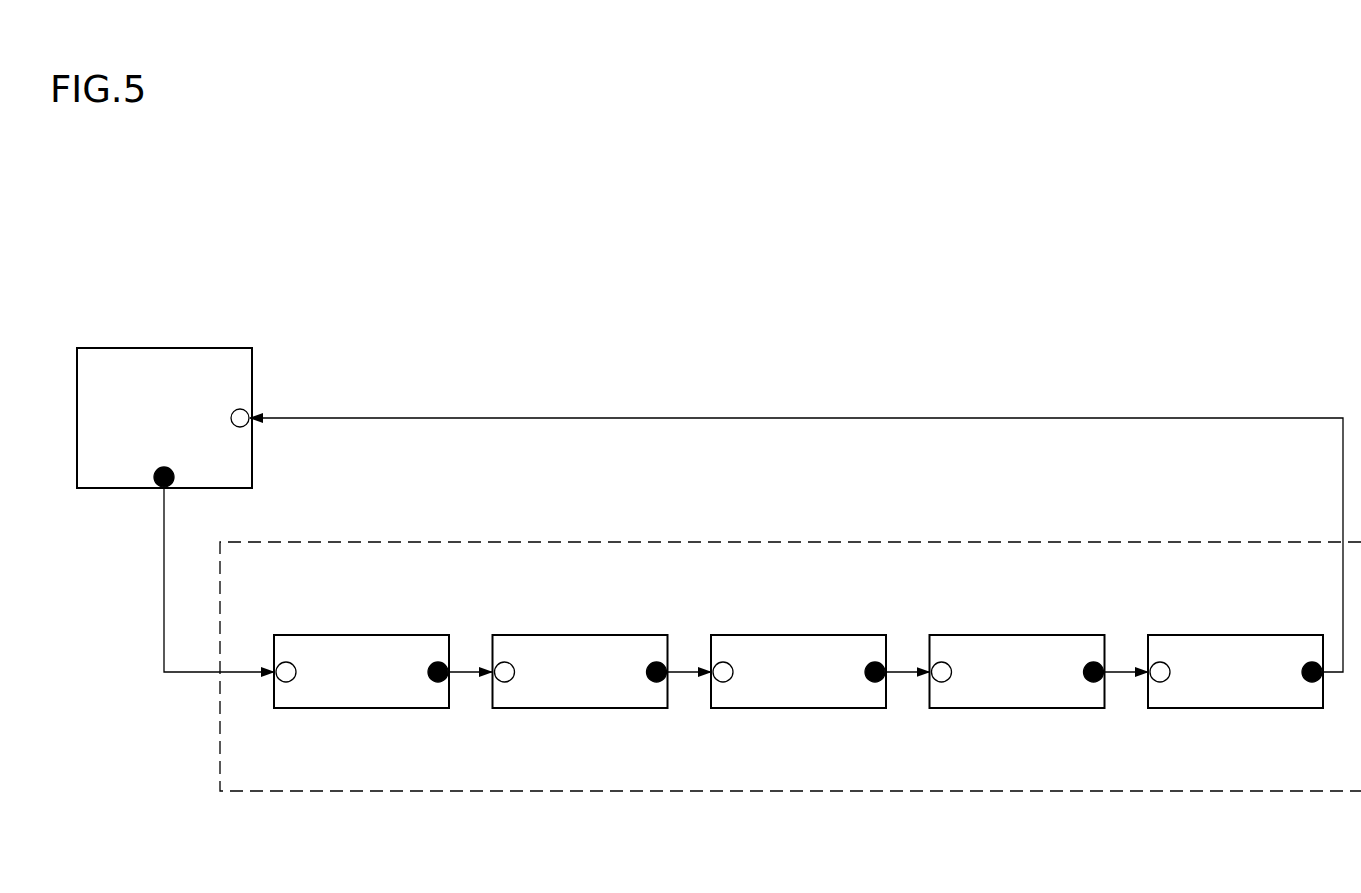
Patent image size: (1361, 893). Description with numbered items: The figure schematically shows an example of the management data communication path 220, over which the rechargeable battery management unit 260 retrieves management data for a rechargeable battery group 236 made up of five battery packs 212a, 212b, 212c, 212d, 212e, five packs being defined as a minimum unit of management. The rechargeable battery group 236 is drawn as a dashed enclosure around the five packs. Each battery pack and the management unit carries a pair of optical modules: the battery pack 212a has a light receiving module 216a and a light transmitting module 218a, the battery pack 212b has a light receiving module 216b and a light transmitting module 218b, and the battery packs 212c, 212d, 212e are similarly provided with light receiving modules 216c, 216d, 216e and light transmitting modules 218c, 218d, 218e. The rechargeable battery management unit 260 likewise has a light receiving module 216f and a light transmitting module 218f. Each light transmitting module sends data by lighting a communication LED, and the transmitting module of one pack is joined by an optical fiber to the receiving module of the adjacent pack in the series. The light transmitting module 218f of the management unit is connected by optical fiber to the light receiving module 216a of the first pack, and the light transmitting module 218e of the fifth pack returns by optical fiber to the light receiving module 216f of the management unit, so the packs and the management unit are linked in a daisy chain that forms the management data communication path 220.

The rechargeable battery management unit 260 is at (197, 348).
The light receiving module 216f is at (245, 409).
The light transmitting module 218f is at (153, 477).
The management data communication path 220 is at (780, 418).
The rechargeable battery group 236 is at (1033, 542).
The battery pack 212a is at (372, 635).
The battery pack 212b is at (590, 635).
The battery pack 212c is at (809, 635).
The battery pack 212d is at (1028, 635).
The battery pack 212e is at (1246, 635).
The light receiving module 216a is at (286, 682).
The light receiving module 216b is at (504, 682).
The light receiving module 216c is at (723, 682).
The light receiving module 216d is at (942, 682).
The light receiving module 216e is at (1160, 682).
The light transmitting module 218a is at (438, 682).
The light transmitting module 218b is at (656, 682).
The light transmitting module 218c is at (875, 682).
The light transmitting module 218d is at (1094, 682).
The light transmitting module 218e is at (1312, 682).